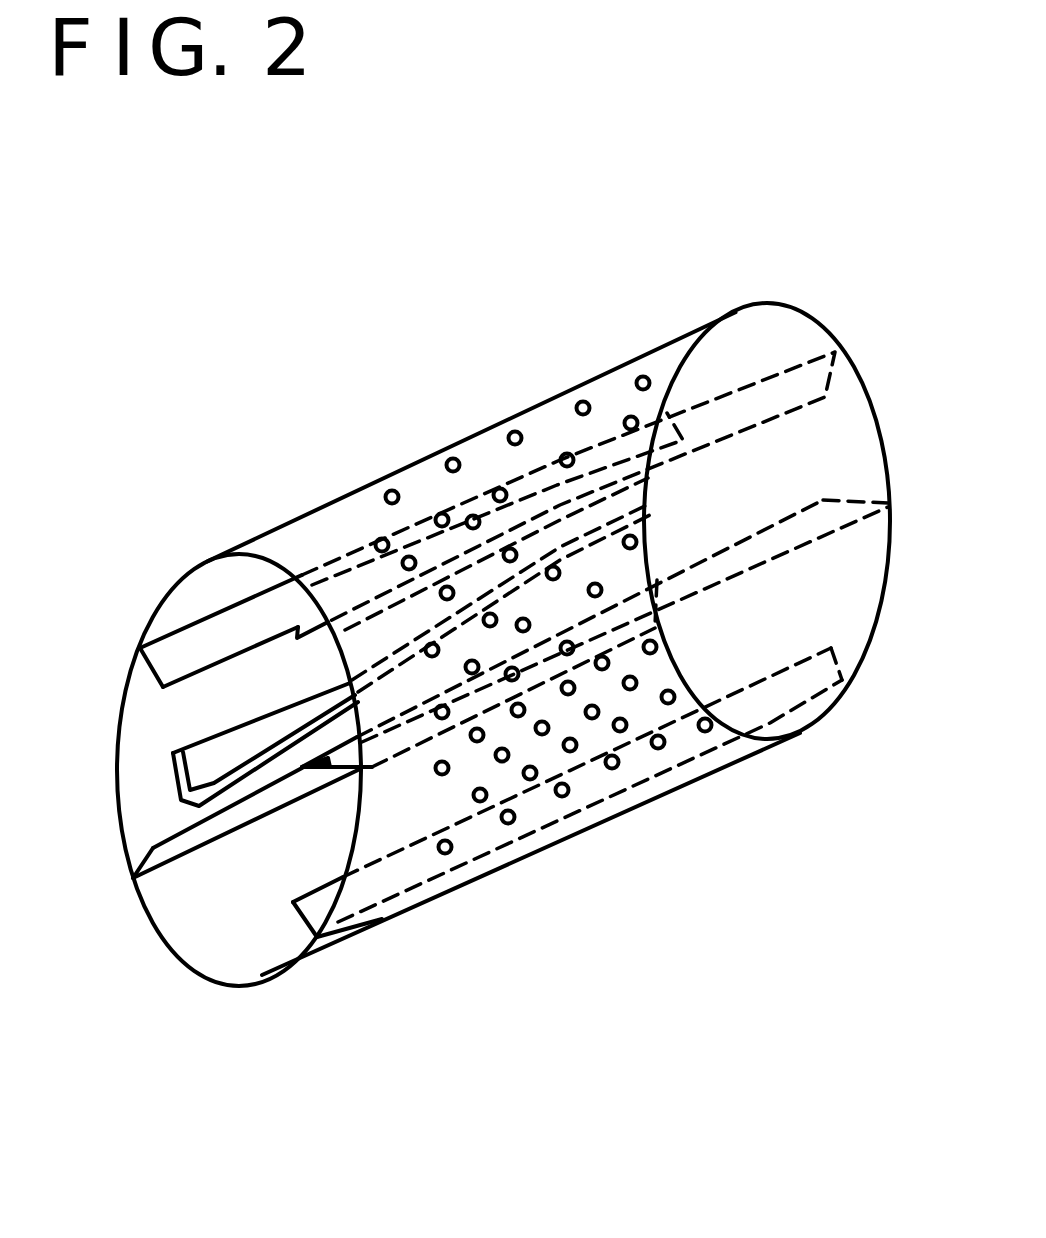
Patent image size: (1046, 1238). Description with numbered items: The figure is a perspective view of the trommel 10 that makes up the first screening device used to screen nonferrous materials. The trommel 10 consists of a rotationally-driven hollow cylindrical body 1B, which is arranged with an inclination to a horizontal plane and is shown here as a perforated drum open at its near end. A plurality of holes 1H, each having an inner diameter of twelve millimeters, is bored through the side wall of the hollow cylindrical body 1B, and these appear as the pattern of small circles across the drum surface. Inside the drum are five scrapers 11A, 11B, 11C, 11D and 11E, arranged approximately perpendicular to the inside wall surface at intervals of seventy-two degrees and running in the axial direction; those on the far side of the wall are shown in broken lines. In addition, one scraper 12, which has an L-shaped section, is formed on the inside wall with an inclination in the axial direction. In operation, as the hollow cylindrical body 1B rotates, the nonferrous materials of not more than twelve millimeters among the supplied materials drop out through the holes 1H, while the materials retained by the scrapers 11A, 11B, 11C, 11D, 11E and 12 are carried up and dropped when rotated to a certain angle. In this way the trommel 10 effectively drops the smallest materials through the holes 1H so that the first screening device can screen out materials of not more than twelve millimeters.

The trommel 10 is at (503, 630).
The hollow cylindrical body 1B is at (548, 410).
The holes 1H is at (592, 719).
The scraper 11A is at (347, 768).
The scraper 11B is at (449, 853).
The scraper 11C is at (303, 578).
The scraper 11D is at (200, 640).
The scraper 11E is at (186, 844).
The scraper 12 is at (252, 748).